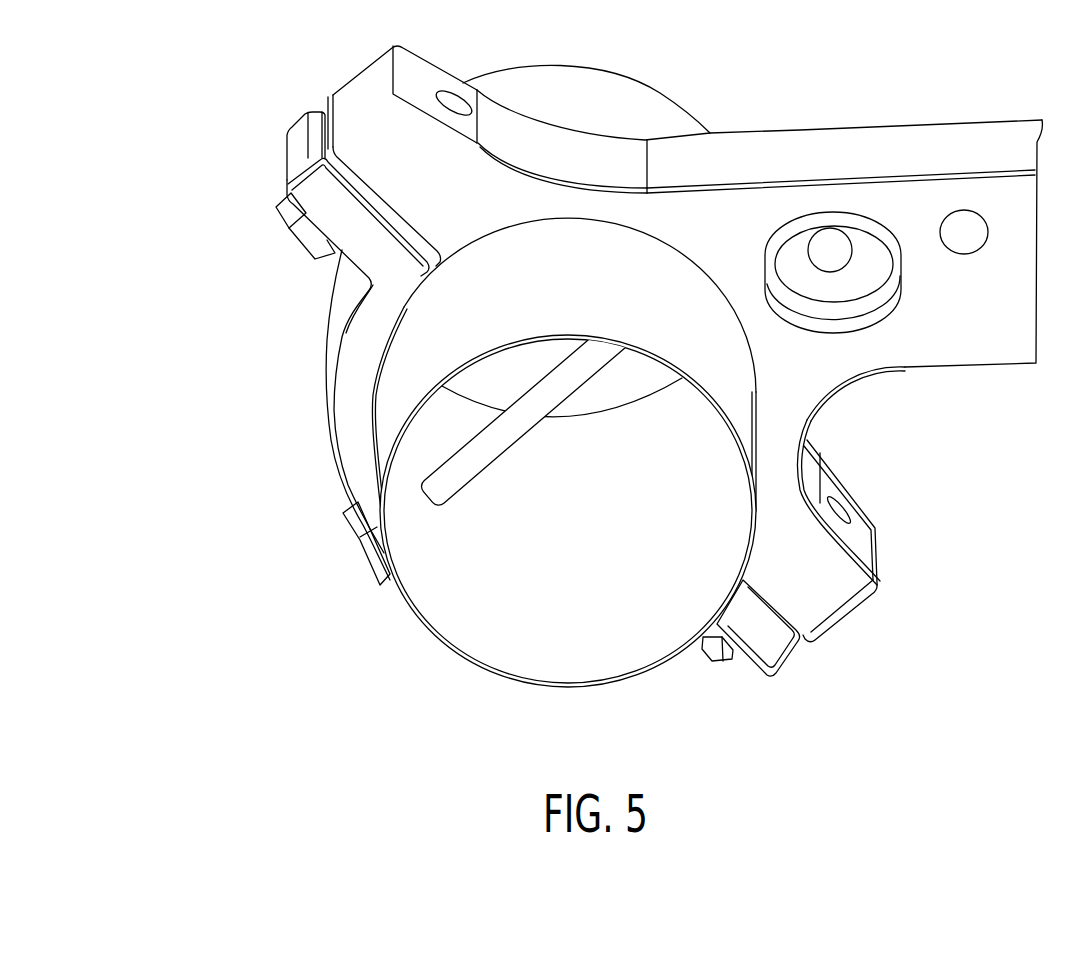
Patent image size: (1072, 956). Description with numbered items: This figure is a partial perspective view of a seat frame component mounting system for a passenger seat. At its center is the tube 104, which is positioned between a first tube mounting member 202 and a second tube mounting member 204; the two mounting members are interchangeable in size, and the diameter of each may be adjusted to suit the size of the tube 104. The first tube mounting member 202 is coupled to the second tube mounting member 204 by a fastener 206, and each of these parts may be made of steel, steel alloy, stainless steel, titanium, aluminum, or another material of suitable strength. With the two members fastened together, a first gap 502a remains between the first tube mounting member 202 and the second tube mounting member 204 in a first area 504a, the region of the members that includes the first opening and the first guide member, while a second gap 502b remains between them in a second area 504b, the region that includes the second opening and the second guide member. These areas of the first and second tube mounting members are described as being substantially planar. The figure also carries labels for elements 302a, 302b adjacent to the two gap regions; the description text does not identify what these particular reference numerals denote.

The tube 104 is at (743, 380).
The first tube mounting member 202 is at (866, 138).
The second tube mounting member 204 is at (350, 405).
The fastener 206 is at (363, 552).
The first nut 302a is at (305, 243).
The second nut 302b is at (703, 660).
The first gap 502a is at (317, 103).
The second gap 502b is at (803, 637).
The first area 504a is at (245, 322).
The second area 504b is at (828, 433).